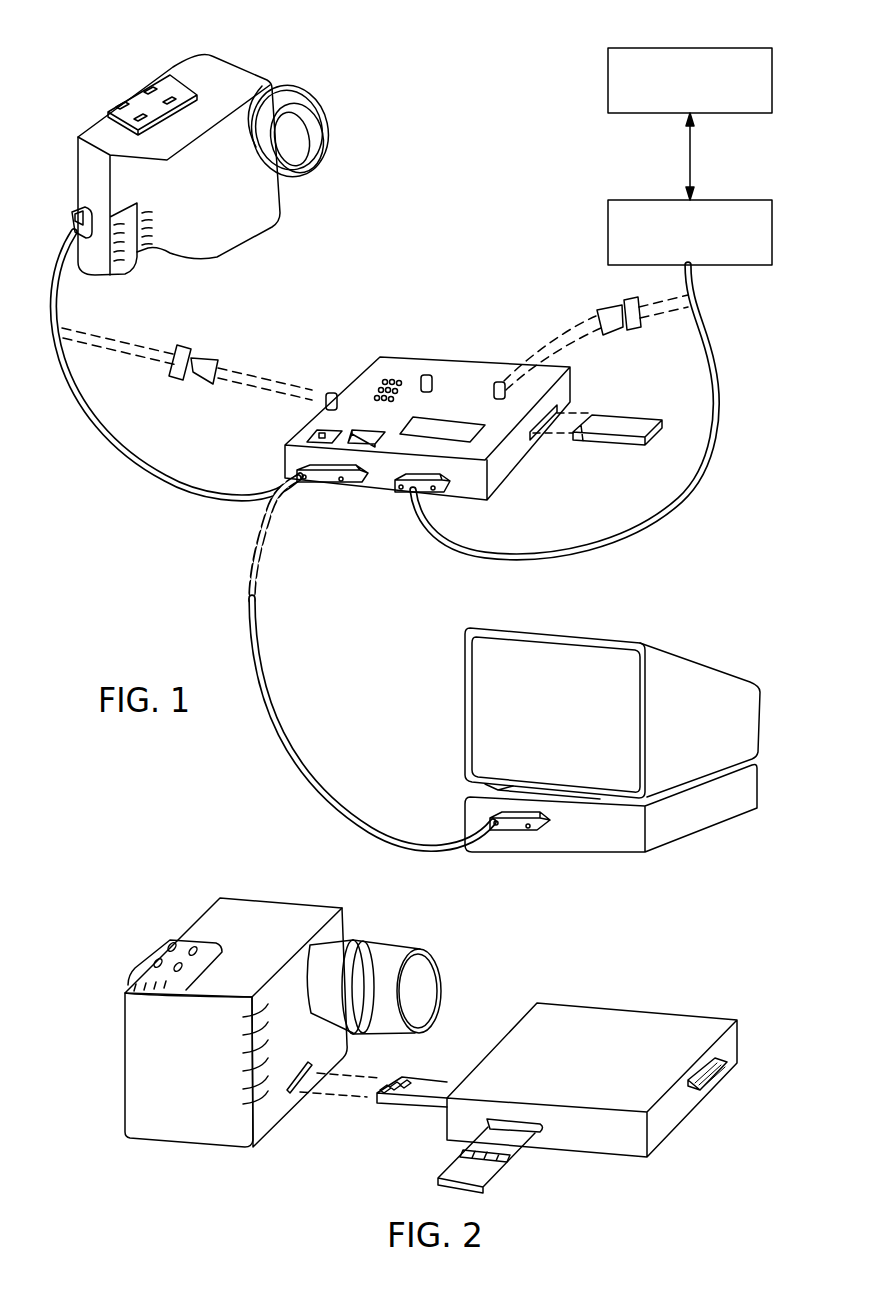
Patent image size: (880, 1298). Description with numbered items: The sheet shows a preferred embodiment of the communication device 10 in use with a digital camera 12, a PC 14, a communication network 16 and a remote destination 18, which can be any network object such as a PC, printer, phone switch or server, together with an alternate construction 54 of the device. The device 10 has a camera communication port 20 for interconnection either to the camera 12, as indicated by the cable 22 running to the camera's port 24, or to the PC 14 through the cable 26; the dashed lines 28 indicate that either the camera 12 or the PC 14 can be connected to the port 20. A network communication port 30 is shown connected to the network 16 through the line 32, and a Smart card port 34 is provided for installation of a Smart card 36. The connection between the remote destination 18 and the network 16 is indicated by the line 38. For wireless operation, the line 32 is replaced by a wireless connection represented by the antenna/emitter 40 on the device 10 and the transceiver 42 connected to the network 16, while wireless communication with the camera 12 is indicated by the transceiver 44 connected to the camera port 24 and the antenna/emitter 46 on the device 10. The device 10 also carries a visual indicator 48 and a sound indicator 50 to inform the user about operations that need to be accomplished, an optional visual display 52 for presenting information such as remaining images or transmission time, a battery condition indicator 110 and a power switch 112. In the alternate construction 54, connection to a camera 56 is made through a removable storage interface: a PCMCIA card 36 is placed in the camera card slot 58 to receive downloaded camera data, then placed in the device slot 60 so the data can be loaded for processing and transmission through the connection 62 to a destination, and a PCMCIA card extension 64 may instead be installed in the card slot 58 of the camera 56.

In FIG. 1, the communication device 10 is at (452, 373).
In FIG. 1, the digital camera 12 is at (222, 82).
In FIG. 1, the PC 14 is at (448, 796).
In FIG. 1, the communication network 16 is at (606, 223).
In FIG. 1, the remote destination 18 is at (606, 78).
In FIG. 1, the camera communication port 20 is at (295, 465).
In FIG. 1, the cable 22 is at (102, 432).
In FIG. 1, the port 24 is at (73, 222).
In FIG. 1, the cable 26 is at (276, 703).
In FIG. 1, the dashed lines 28 is at (245, 519).
In FIG. 1, the network communication port 30 is at (407, 487).
In FIG. 1, the line 32 is at (456, 548).
In FIG. 1, the Smart card port 34 is at (542, 431).
In FIG. 1, the Smart card 36 is at (630, 421).
In FIG. 2, the Smart card 36 is at (482, 1172).
In FIG. 1, the line 38 is at (704, 161).
In FIG. 1, the antenna/emitter 40 is at (502, 380).
In FIG. 1, the transceiver 42 is at (612, 304).
In FIG. 1, the transceiver 44 is at (210, 355).
In FIG. 1, the antenna/emitter 46 is at (329, 398).
In FIG. 1, the visual indicator 48 is at (432, 374).
In FIG. 1, the sound indicator 50 is at (392, 378).
In FIG. 1, the visual display 52 is at (442, 422).
In FIG. 2, the alternate construction 54 is at (556, 1081).
In FIG. 2, the camera 56 is at (267, 914).
In FIG. 2, the camera card slot 58 is at (287, 1092).
In FIG. 2, the slot 60 is at (538, 1128).
In FIG. 2, the connection 62 is at (718, 1060).
In FIG. 2, the PCMCIA card extension 64 is at (412, 1093).
In FIG. 1, the battery condition indicator 110 is at (312, 433).
In FIG. 1, the power switch 112 is at (364, 428).